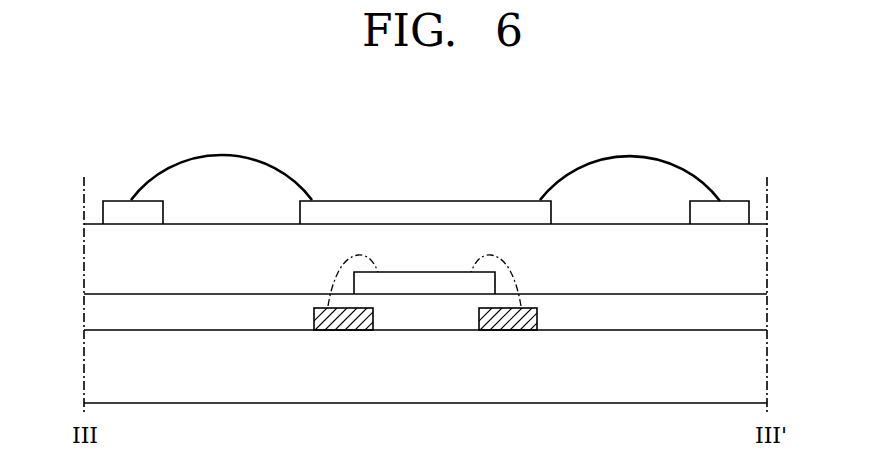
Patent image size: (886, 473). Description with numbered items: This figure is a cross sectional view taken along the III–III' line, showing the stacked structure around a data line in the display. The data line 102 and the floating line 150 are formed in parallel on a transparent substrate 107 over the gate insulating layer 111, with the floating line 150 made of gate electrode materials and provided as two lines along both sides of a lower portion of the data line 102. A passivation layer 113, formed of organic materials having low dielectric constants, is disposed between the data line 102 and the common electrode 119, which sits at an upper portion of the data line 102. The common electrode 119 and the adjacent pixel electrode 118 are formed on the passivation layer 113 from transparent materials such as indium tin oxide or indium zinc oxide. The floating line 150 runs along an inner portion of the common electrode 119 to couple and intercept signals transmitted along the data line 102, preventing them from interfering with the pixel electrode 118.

The pixel electrode 118 is at (729, 207).
The common electrode 119 is at (434, 207).
The passivation layer 113 is at (758, 263).
The gate insulating layer 111 is at (758, 316).
The transparent substrate 107 is at (758, 375).
The floating line 150 is at (510, 425).
The data line 102 is at (427, 283).